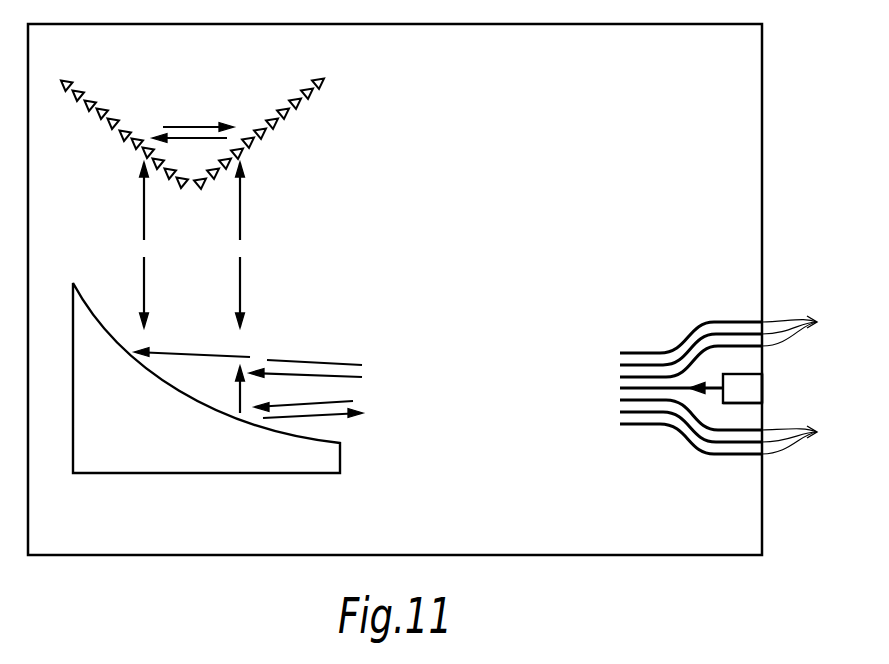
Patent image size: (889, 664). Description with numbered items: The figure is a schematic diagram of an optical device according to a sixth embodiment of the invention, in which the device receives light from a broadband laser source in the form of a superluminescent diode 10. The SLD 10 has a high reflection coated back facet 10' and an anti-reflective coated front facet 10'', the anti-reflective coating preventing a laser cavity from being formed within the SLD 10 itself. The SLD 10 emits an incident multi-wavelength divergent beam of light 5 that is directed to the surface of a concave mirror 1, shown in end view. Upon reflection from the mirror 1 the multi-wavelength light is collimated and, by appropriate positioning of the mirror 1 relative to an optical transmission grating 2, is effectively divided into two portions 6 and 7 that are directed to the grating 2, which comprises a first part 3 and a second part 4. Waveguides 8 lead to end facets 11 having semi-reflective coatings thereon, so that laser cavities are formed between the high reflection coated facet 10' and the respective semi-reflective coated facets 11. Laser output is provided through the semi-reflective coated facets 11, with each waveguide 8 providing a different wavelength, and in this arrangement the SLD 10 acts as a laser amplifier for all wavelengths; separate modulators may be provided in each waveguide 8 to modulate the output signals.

The concave mirror 1 is at (327, 451).
The optical transmission grating 2 is at (201, 118).
The first part 3 is at (82, 92).
The second part 4 is at (302, 88).
The incident multi-wavelength divergent beam of light 5 is at (711, 382).
The first portion of the beam 6 is at (180, 127).
The second portion of the beam 7 is at (202, 138).
The waveguide 8 is at (684, 339).
The superluminescent diode 10 is at (779, 374).
The high reflection coated back facet 10' is at (802, 391).
The anti-reflective coated front facet 10'' is at (739, 449).
The end facet 11 is at (799, 381).